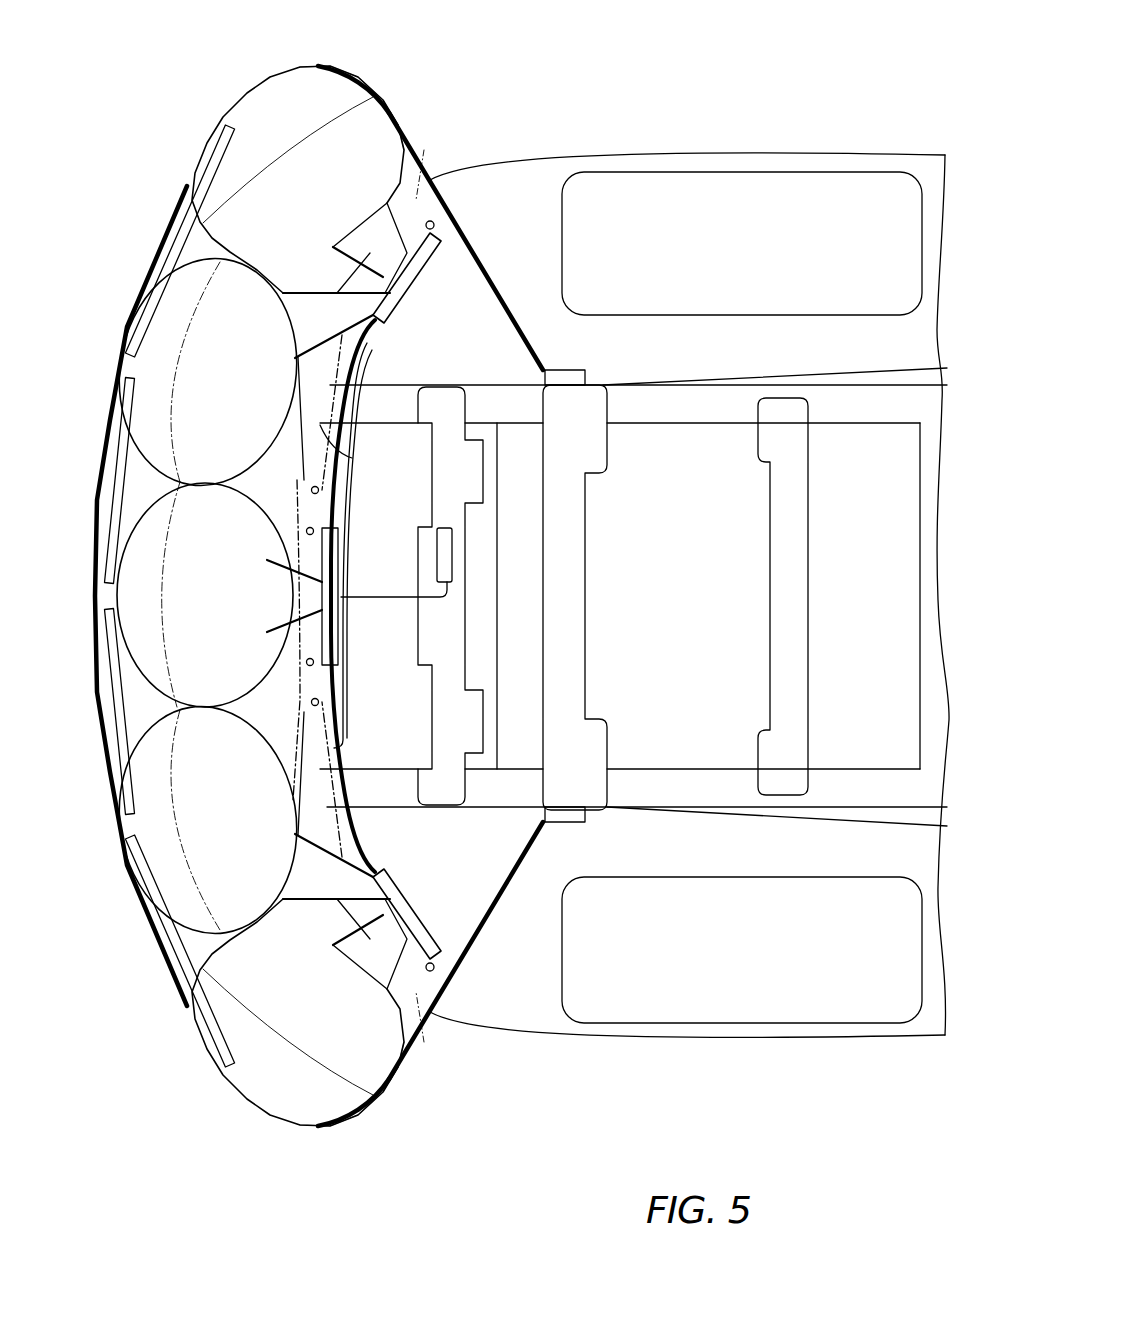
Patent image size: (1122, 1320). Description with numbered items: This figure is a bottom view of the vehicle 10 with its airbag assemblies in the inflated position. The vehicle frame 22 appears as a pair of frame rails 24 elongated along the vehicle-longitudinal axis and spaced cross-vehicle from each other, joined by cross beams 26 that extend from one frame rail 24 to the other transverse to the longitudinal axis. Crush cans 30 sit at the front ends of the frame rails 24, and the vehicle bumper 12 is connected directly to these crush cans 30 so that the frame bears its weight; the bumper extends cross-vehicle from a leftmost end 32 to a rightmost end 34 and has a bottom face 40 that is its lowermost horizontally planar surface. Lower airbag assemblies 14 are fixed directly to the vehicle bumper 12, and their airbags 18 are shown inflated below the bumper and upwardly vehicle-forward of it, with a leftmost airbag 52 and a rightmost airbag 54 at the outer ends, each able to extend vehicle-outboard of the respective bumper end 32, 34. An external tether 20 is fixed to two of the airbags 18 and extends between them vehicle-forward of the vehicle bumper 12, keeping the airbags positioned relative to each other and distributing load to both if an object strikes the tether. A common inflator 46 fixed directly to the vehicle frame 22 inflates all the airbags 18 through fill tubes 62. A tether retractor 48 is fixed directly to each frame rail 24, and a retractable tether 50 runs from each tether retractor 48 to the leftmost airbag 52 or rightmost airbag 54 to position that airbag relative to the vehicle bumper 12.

The vehicle 10 is at (741, 94).
The vehicle bumper 12 is at (417, 995).
The lower airbag assembly 14 is at (320, 633).
The airbag 18 is at (262, 78).
The external tether 20 is at (158, 243).
The vehicle frame 22 is at (645, 386).
The frame rail 24 is at (708, 410).
The cross beam 26 is at (568, 570).
The crush can 30 is at (507, 407).
The leftmost end 32 is at (417, 193).
The rightmost end 34 is at (412, 953).
The bottom face 40 is at (297, 503).
The inflator 46 is at (452, 553).
The tether retractor 48 is at (556, 370).
The retractable tether 50 is at (487, 273).
The leftmost airbag 52 is at (297, 85).
The rightmost airbag 54 is at (298, 1107).
The fill tube 62 is at (373, 595).